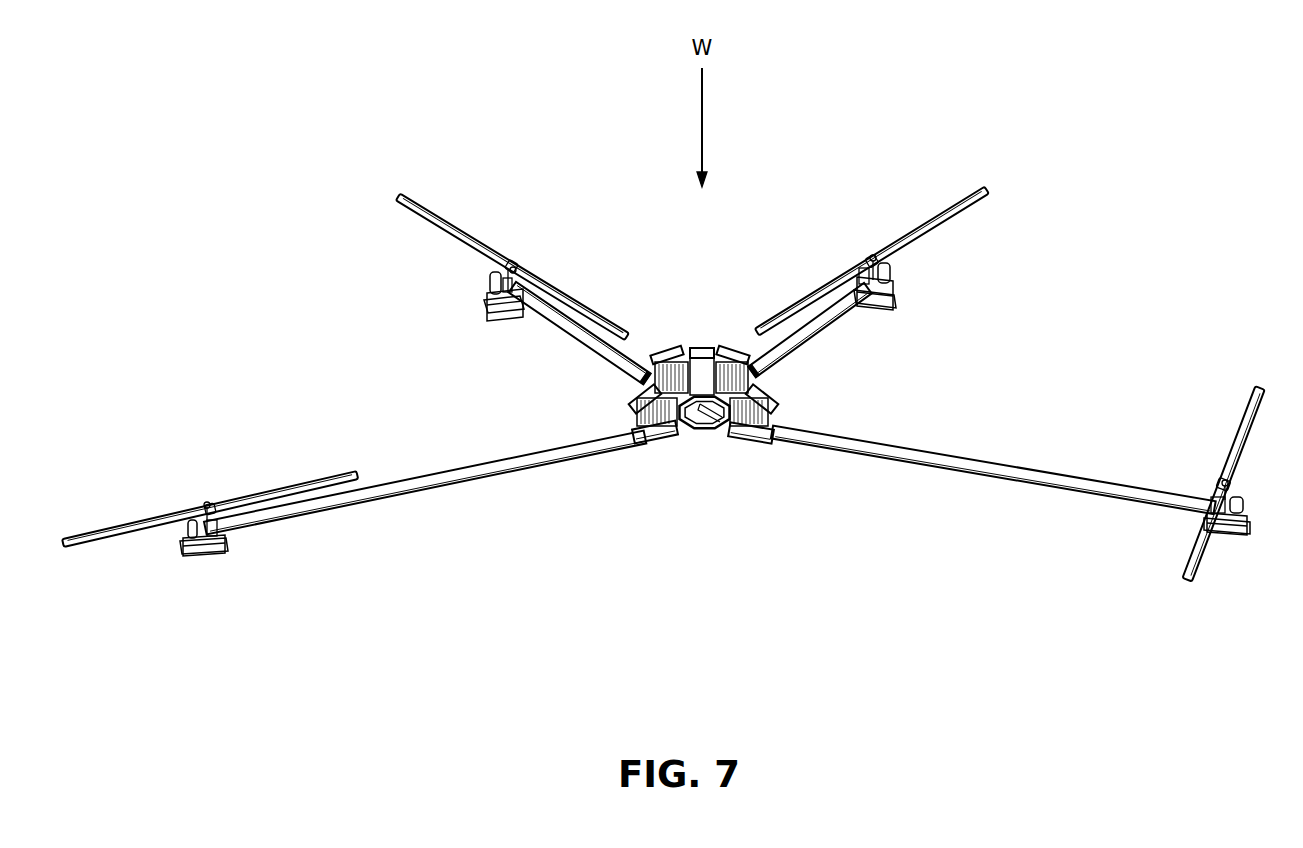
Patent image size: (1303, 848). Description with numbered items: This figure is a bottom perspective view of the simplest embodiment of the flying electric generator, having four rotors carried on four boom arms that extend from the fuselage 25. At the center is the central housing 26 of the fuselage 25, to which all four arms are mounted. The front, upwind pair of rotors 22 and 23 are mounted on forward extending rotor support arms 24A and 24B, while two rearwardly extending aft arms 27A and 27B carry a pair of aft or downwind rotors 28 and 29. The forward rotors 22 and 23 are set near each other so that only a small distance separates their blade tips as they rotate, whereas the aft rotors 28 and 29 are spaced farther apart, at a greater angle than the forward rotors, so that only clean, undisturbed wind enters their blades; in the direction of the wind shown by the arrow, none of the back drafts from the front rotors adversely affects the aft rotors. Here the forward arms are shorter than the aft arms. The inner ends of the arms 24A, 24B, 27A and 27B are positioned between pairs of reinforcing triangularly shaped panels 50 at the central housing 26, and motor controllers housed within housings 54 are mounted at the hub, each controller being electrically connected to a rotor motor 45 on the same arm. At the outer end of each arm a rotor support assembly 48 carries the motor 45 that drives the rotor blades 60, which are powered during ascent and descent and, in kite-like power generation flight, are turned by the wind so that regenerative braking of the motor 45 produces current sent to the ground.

The front rotor 22 is at (518, 272).
The front rotor 23 is at (871, 262).
The forward rotor support arm 24A is at (602, 357).
The forward rotor support arm 24B is at (830, 337).
The fuselage 25 is at (756, 447).
The central housing 26 is at (704, 340).
The aft rotor support arm 27A is at (465, 490).
The aft rotor support arm 27B is at (1046, 488).
The aft rotor 28 is at (208, 505).
The aft rotor 29 is at (1218, 482).
The motor 45 is at (893, 272).
The rotor support assembly 48 is at (897, 300).
The reinforcing triangularly shaped panel 50 is at (636, 432).
The motor controller housing 54 is at (665, 345).
The rotor blade 60 is at (957, 197).